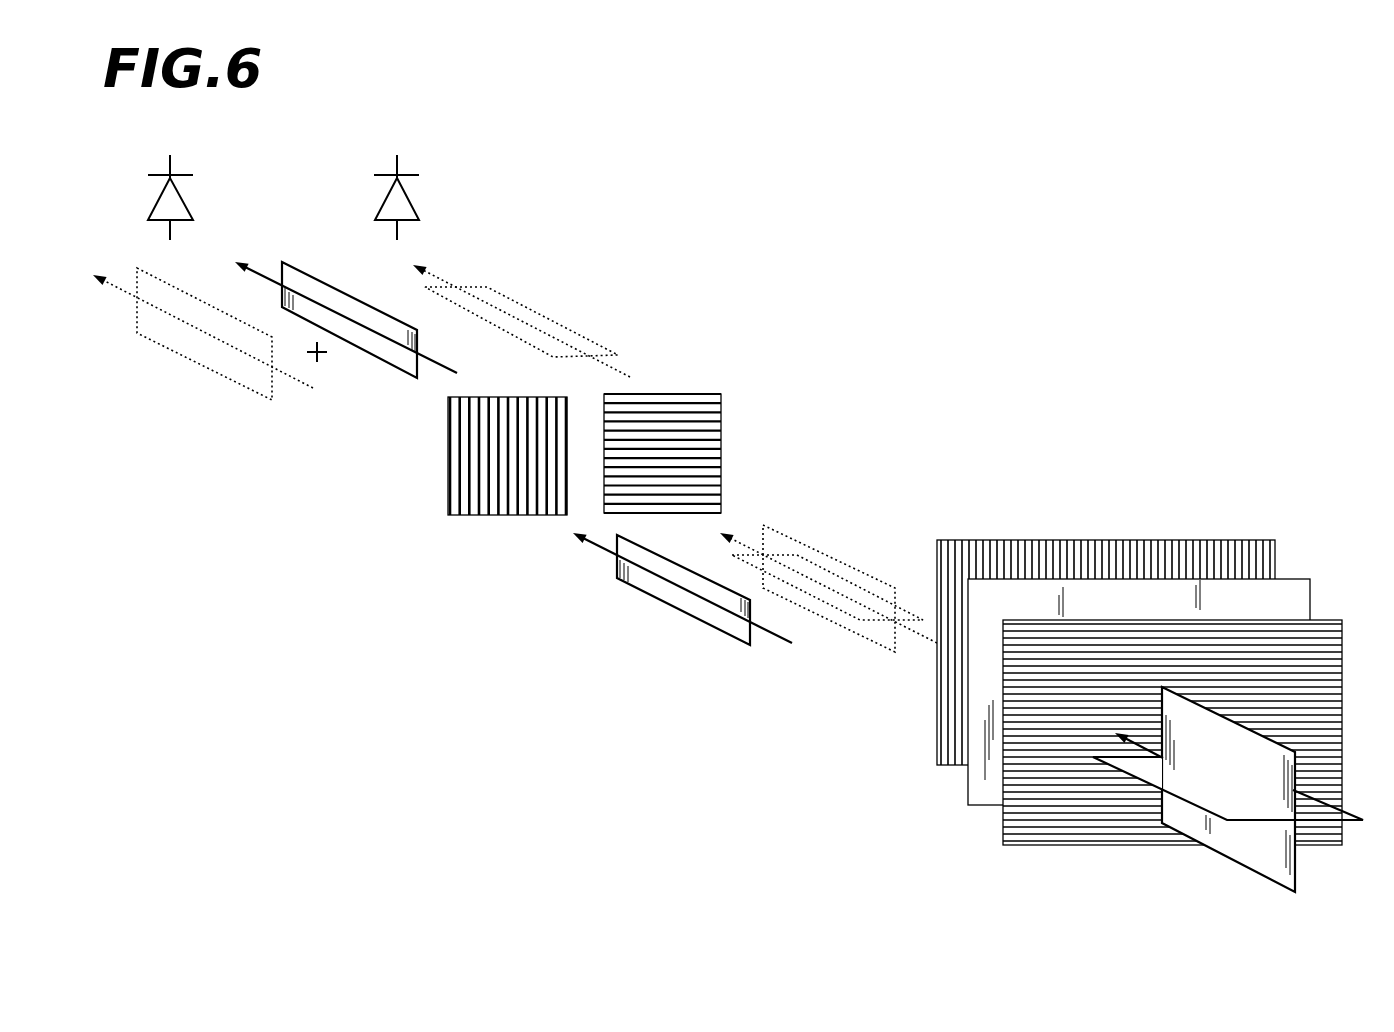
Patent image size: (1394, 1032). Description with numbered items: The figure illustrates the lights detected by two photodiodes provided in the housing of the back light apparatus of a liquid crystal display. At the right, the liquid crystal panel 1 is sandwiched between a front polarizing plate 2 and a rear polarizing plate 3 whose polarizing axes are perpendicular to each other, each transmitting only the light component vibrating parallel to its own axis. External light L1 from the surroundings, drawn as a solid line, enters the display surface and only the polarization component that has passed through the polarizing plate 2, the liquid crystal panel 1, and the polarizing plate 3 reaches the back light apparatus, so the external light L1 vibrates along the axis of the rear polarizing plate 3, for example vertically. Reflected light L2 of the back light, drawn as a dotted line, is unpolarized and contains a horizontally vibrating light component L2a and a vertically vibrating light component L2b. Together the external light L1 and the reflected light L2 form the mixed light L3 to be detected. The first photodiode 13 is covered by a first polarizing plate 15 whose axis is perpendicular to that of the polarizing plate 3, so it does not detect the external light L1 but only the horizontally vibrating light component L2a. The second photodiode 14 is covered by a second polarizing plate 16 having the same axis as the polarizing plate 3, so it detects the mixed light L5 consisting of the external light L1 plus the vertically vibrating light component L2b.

The liquid crystal panel 1 is at (1293, 597).
The polarizing plate 2 is at (1322, 652).
The polarizing plate 3 is at (1270, 548).
The first photodiode 13 is at (418, 210).
The second photodiode 14 is at (190, 208).
The first polarizing plate 15 is at (712, 398).
The second polarizing plate 16 is at (452, 500).
The external light L1 is at (397, 355).
The reflected light L2 is at (890, 703).
The horizontally vibrating light component L2a is at (557, 335).
The vertically vibrating light component L2b is at (253, 378).
The mixed light L3 is at (838, 752).
The mixed light L5 is at (383, 448).